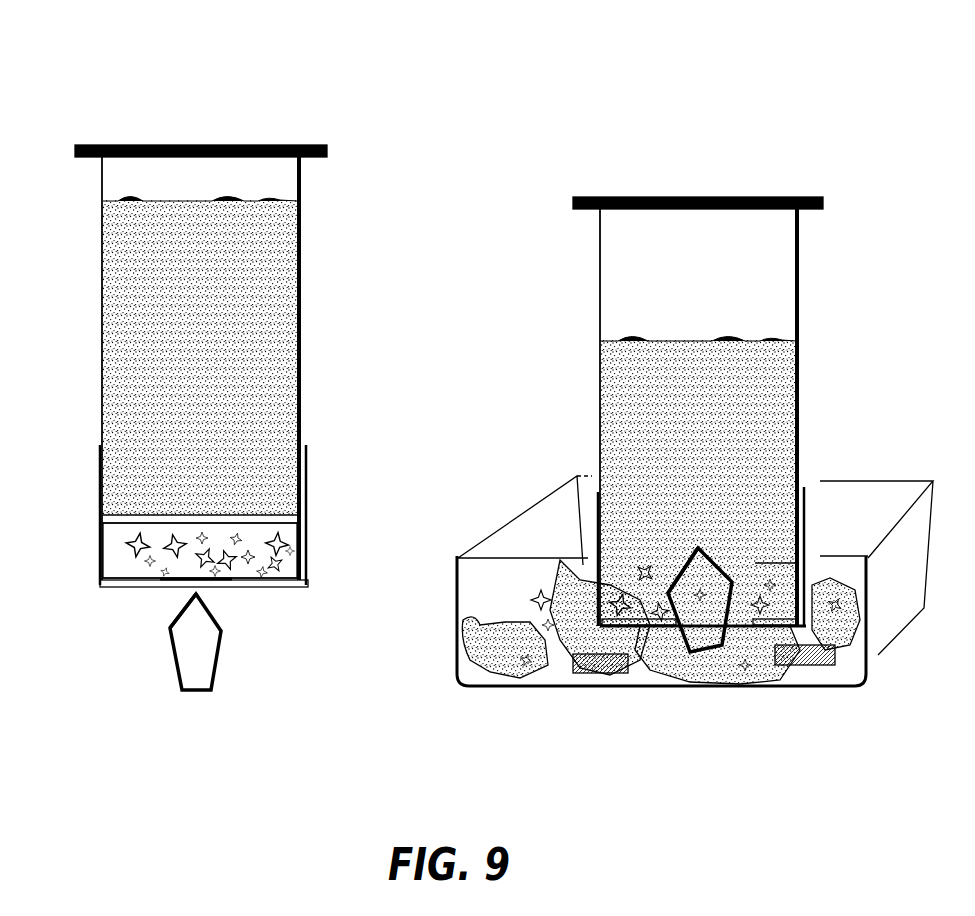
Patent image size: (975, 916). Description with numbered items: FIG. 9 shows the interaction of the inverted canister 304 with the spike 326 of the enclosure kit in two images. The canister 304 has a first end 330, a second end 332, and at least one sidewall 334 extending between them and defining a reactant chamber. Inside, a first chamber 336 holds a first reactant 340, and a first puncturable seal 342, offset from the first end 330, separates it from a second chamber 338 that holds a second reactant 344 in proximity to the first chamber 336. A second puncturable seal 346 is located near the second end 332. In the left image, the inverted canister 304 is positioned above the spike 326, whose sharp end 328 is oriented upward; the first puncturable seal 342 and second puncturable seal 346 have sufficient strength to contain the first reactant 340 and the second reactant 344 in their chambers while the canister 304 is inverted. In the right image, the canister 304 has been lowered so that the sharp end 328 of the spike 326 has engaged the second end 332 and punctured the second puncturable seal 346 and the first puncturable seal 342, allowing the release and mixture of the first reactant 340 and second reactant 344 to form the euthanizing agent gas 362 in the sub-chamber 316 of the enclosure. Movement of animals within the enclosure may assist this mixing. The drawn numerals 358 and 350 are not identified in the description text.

The canister 304 is at (146, 96).
The first end 330 is at (230, 145).
The thick side wall 358 is at (314, 146).
The first chamber 336 is at (100, 297).
The sidewall 334 is at (304, 350).
The first reactant 340 is at (193, 395).
The outer sleeve 350 is at (307, 462).
The first puncturable seal 342 is at (226, 517).
The second chamber 338 is at (100, 547).
The second reactant 344 is at (232, 565).
The second end 332 is at (100, 586).
The second puncturable seal 346 is at (142, 585).
The sharp end 328 is at (172, 621).
The spike 326 is at (204, 651).
The sub-chamber 316 is at (908, 533).
The euthanizing agent gas 362 is at (830, 613).